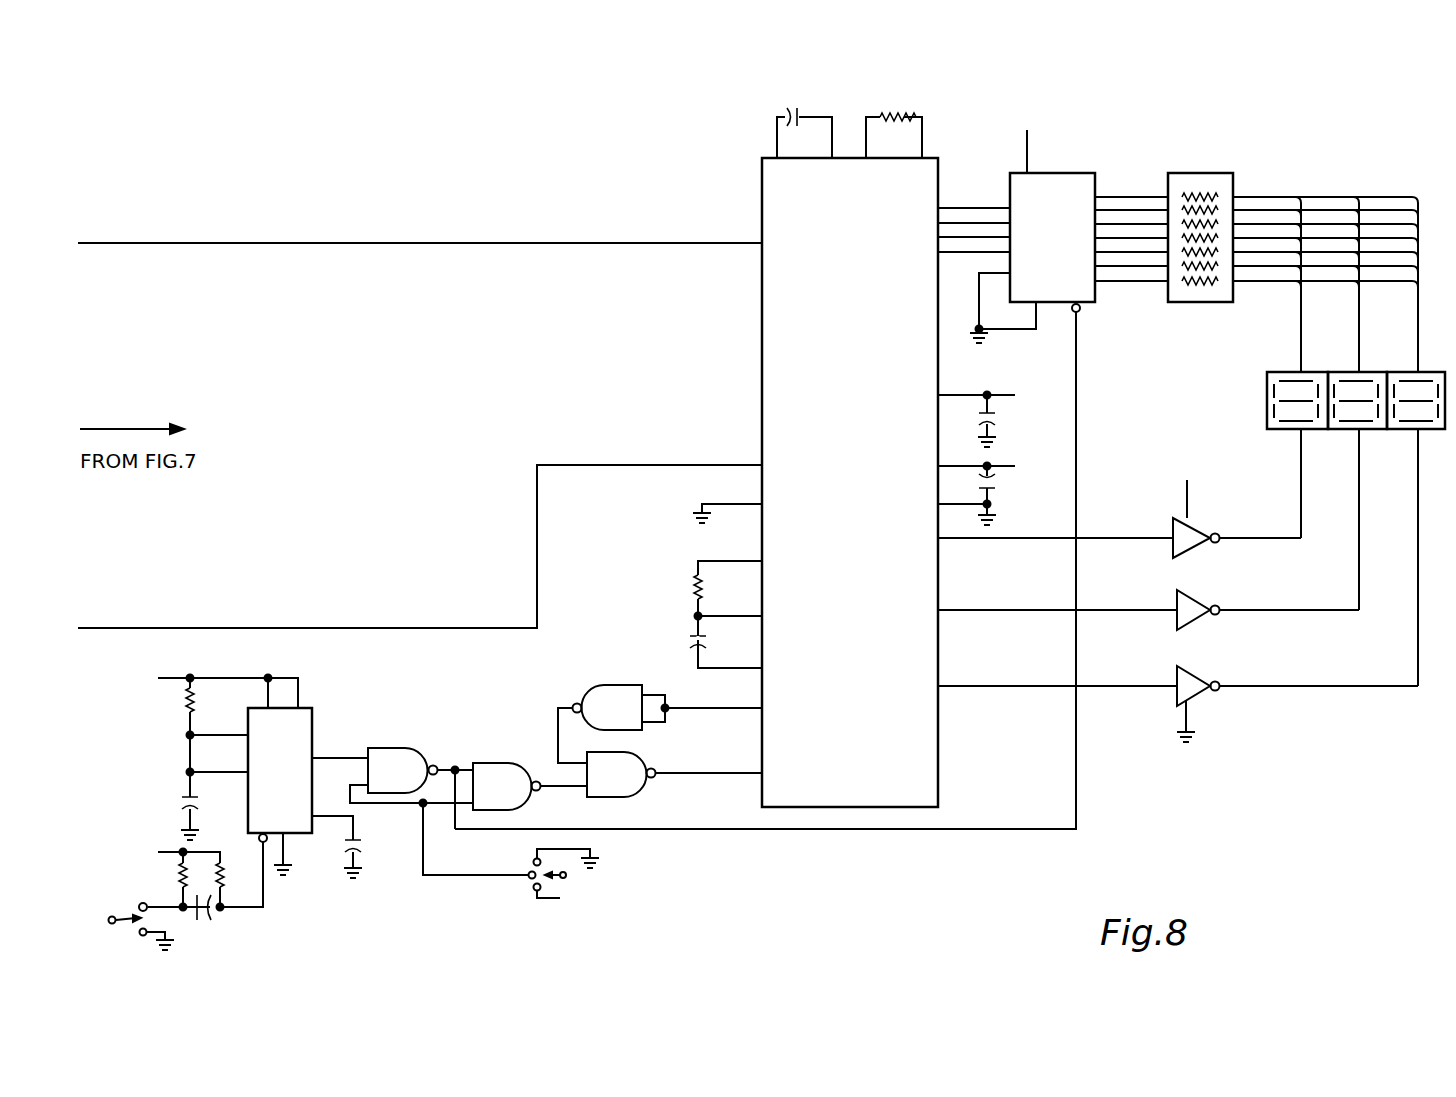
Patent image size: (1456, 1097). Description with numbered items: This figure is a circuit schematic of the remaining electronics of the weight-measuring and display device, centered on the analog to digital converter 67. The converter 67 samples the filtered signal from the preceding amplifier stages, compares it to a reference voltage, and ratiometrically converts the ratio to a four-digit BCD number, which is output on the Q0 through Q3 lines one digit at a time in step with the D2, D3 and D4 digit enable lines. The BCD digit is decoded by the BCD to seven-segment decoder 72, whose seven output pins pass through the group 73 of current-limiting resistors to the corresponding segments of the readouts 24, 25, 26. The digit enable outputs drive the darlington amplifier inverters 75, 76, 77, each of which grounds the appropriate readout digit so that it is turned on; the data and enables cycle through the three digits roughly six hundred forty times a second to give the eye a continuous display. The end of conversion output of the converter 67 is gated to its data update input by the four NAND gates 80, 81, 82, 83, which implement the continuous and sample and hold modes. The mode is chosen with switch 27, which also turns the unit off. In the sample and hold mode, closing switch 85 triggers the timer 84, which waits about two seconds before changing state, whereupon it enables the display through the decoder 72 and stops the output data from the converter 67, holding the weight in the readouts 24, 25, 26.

The analog to digital converter 67 is at (763, 178).
The BCD to seven-segment decoder 72 is at (1067, 173).
The group of current-limiting resistors 73 is at (1240, 176).
The readout 24 is at (1281, 431).
The readout 25 is at (1348, 431).
The readout 26 is at (1408, 431).
The darlington amplifier inverter 75 is at (1201, 533).
The darlington amplifier inverter 76 is at (1204, 605).
The darlington amplifier inverter 77 is at (1204, 683).
The NAND gate 80 is at (415, 749).
The NAND gate 81 is at (516, 762).
The NAND gate 82 is at (610, 685).
The NAND gate 83 is at (636, 792).
The timer 84 is at (313, 722).
The switch 85 is at (124, 909).
The switch 27 is at (598, 882).